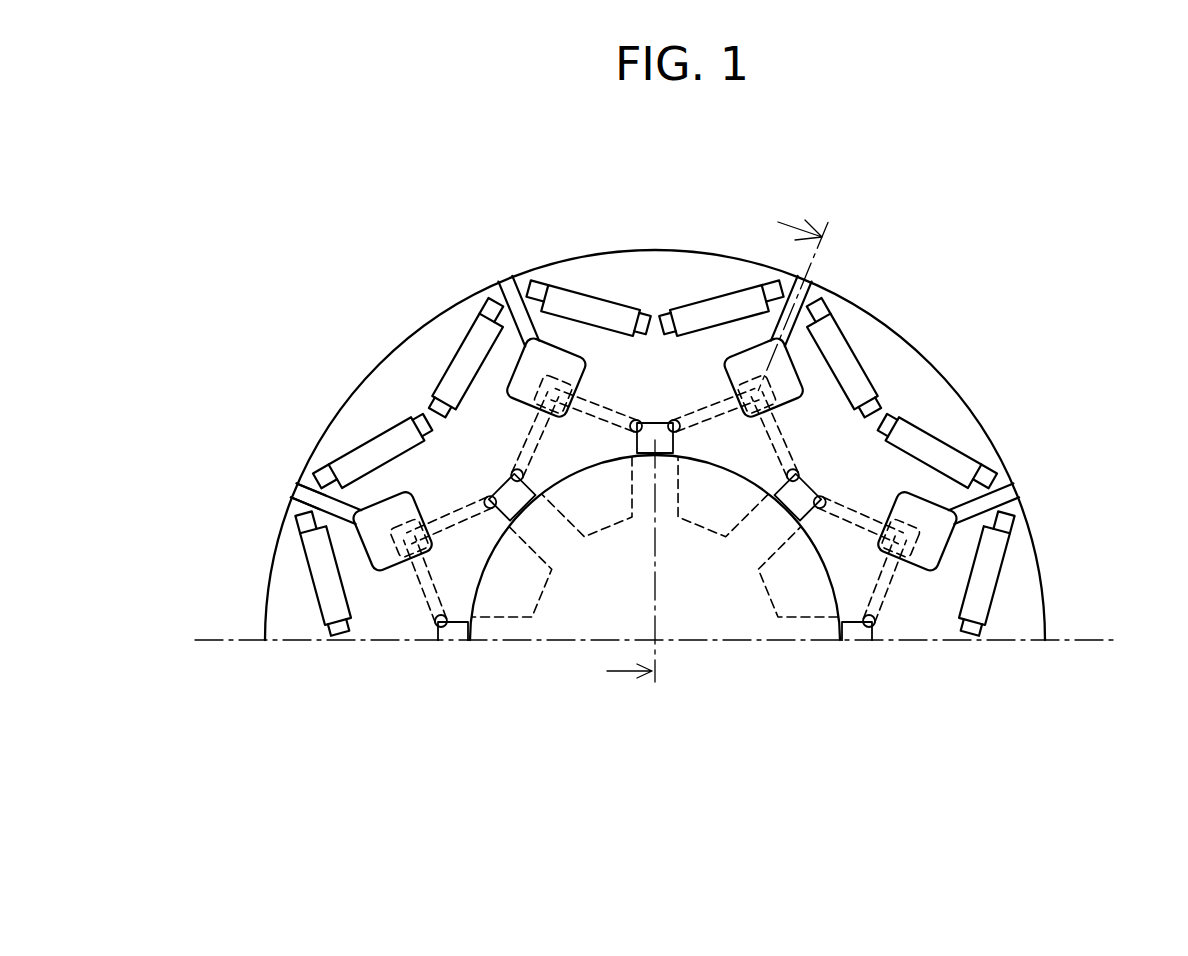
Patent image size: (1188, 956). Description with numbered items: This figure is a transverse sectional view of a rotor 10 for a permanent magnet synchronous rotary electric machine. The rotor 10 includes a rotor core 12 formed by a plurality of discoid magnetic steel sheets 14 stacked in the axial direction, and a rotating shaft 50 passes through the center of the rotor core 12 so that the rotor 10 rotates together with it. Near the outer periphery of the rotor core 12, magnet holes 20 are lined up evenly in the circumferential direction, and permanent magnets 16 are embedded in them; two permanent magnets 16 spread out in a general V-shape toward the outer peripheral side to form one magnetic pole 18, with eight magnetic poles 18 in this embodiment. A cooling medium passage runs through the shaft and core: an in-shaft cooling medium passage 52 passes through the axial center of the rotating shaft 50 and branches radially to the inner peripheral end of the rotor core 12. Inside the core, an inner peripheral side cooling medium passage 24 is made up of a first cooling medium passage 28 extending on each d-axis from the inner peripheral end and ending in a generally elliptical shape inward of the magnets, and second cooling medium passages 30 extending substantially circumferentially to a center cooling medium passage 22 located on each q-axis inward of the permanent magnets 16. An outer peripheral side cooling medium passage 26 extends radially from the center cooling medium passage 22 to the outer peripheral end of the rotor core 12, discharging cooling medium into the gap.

The rotor 10 is at (372, 237).
The rotor core 12 is at (1025, 600).
The magnetic steel sheet 14 is at (689, 445).
The permanent magnet 16 is at (654, 386).
The magnetic pole 18 is at (654, 236).
The magnet hole 20 is at (506, 297).
The center cooling medium passage 22 is at (393, 508).
The inner peripheral side cooling medium passage 24 is at (655, 596).
The outer peripheral side cooling medium passage 26 is at (298, 493).
The first cooling medium passage 28 is at (458, 632).
The second cooling medium passage 30 is at (420, 525).
The rotating shaft 50 is at (677, 620).
The in-shaft cooling medium passage 52 is at (773, 583).